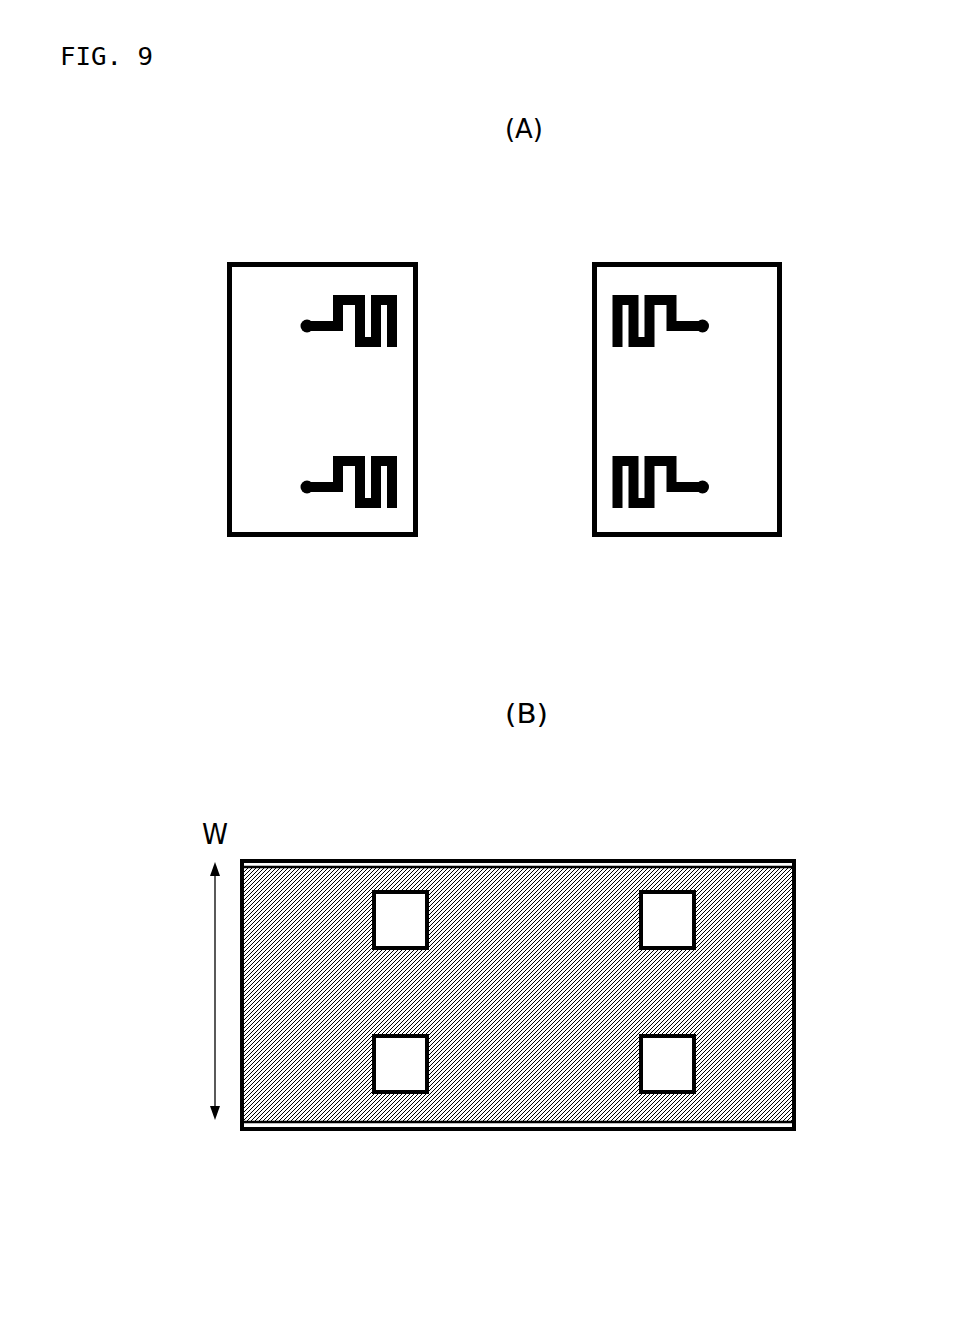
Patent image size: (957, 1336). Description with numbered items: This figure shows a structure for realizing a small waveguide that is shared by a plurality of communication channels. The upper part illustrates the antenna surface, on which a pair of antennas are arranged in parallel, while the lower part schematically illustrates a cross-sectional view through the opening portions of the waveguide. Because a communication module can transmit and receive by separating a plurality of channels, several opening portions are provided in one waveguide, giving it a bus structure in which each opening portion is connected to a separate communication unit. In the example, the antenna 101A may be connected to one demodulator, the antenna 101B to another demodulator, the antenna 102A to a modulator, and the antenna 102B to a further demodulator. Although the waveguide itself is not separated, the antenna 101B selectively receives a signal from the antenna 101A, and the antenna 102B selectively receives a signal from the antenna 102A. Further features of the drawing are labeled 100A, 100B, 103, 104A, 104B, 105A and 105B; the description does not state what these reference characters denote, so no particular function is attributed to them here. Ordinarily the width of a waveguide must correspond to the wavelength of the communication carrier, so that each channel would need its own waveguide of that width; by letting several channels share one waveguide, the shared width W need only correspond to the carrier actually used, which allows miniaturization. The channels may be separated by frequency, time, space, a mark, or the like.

The first substrate 100A is at (323, 367).
The second substrate 100B is at (687, 367).
The antenna 101A is at (397, 307).
The antenna 101B is at (613, 337).
The antenna 102A is at (397, 476).
The antenna 102B is at (613, 500).
The ground plate 103 is at (797, 881).
The first opening 104A is at (406, 909).
The second opening 104B is at (660, 911).
The third opening 105A is at (410, 1079).
The fourth opening 105B is at (665, 1086).